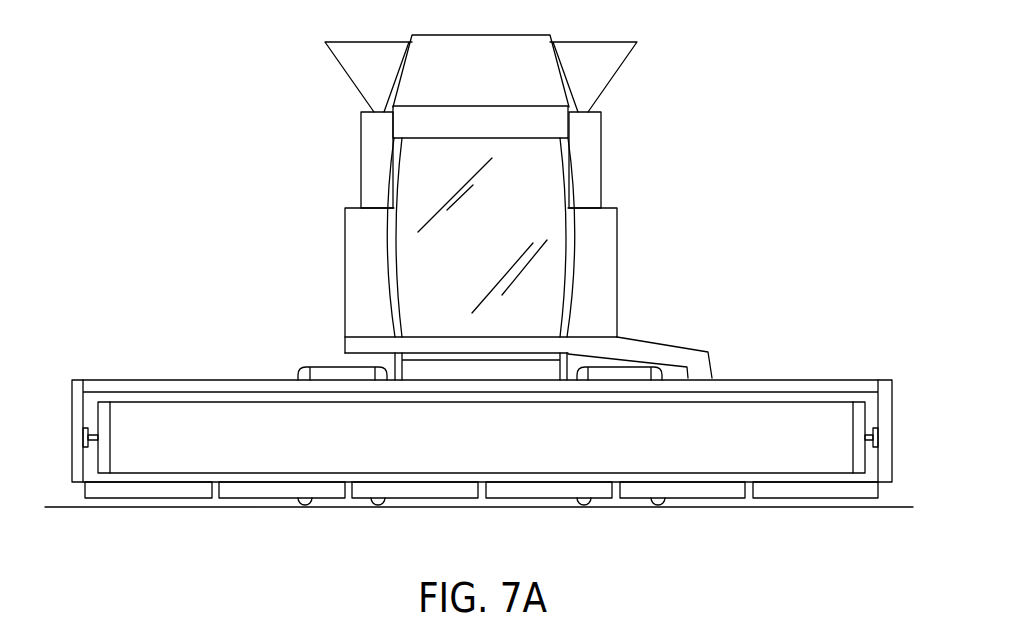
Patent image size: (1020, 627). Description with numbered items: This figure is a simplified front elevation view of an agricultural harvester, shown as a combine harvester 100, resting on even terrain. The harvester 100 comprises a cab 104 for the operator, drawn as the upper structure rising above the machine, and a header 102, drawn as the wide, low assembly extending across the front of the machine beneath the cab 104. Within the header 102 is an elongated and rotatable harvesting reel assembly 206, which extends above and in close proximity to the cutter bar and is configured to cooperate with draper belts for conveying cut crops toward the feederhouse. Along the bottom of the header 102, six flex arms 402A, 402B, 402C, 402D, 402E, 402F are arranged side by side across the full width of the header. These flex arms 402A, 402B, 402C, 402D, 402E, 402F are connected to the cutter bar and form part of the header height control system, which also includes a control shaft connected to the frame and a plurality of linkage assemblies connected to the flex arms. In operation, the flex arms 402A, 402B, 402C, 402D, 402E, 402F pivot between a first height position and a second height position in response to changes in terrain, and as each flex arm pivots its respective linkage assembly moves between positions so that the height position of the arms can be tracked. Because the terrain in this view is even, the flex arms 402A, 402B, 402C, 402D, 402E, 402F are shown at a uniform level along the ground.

The combine harvester 100 is at (158, 176).
The header 102 is at (866, 345).
The cab 104 is at (606, 157).
The harvesting reel assembly 206 is at (745, 422).
The flex arm 402A is at (817, 493).
The flex arm 402B is at (682, 493).
The flex arm 402C is at (547, 493).
The flex arm 402D is at (408, 493).
The flex arm 402E is at (275, 493).
The flex arm 402F is at (140, 493).